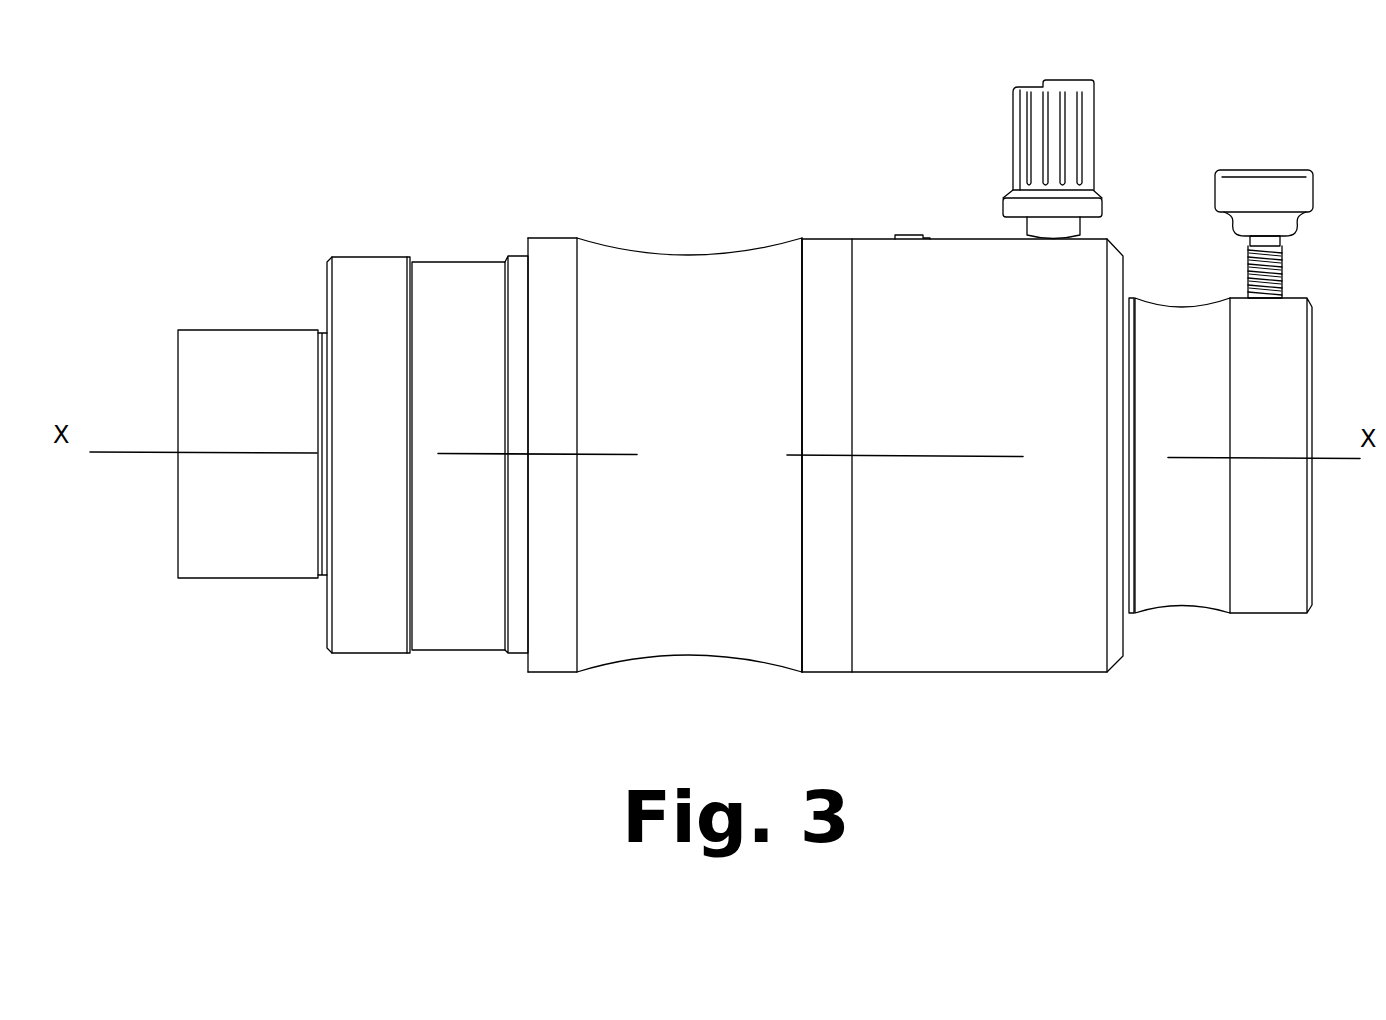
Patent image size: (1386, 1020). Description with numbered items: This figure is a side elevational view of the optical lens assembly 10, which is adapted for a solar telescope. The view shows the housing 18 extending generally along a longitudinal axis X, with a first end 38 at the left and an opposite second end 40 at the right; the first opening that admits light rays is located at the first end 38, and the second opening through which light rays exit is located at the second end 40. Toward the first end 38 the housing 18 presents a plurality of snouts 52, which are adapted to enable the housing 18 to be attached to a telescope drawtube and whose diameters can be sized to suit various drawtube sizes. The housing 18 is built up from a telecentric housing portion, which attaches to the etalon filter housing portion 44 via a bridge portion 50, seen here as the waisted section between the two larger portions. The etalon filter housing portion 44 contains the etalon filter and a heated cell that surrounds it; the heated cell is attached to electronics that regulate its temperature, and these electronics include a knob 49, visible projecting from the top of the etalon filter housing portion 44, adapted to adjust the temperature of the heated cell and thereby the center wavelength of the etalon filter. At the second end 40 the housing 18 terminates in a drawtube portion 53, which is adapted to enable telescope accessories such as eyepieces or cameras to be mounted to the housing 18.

The optical lens assembly 10 is at (1077, 692).
The housing 18 is at (1178, 303).
The first end 38 is at (230, 578).
The second end 40 is at (1238, 610).
The etalon filter housing portion 44 is at (938, 237).
The knob 49 is at (1015, 88).
The bridge portion 50 is at (663, 253).
The snouts 52 is at (220, 330).
The drawtube portion 53 is at (1250, 234).